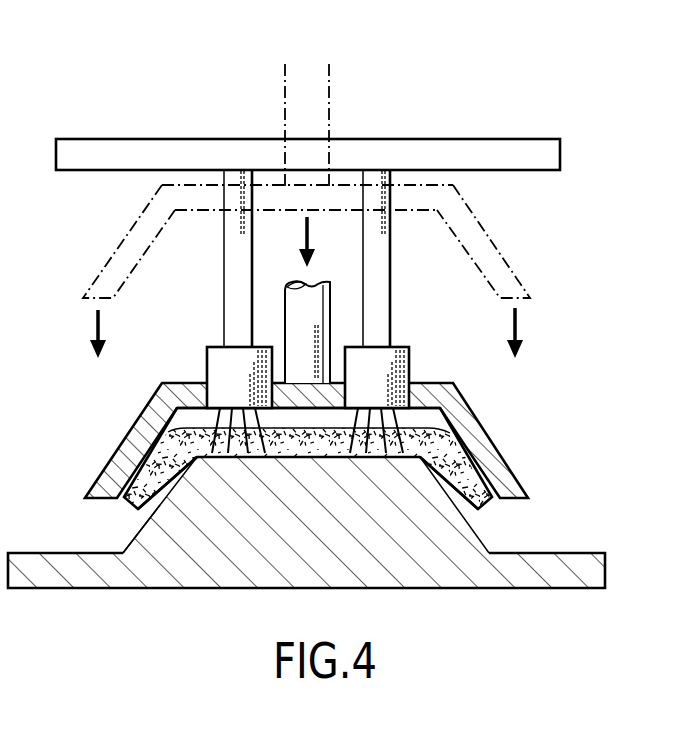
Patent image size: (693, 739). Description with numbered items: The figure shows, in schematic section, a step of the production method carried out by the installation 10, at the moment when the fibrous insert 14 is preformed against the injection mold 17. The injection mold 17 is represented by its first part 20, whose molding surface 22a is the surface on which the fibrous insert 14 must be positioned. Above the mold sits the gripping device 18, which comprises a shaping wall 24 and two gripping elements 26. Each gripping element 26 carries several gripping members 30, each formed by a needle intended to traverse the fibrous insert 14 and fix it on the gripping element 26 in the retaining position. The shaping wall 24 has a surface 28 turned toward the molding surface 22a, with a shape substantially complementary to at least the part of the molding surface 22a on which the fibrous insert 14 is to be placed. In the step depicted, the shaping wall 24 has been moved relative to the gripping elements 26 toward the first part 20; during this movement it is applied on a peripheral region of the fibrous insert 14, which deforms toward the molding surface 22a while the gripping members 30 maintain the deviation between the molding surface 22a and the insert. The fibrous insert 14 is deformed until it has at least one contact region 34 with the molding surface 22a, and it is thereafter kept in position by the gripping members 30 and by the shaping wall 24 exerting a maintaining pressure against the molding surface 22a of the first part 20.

The installation 10 is at (551, 227).
The fibrous insert 14 is at (118, 450).
The injection mold 17 is at (551, 514).
The gripping device 18 is at (527, 456).
The first part 20 is at (576, 572).
The molding surface 22a is at (141, 530).
The shaping wall 24 is at (494, 421).
The gripping element 26 is at (205, 355).
The surface 28 is at (168, 428).
The gripping member 30 is at (407, 417).
The contact region 34 is at (196, 467).